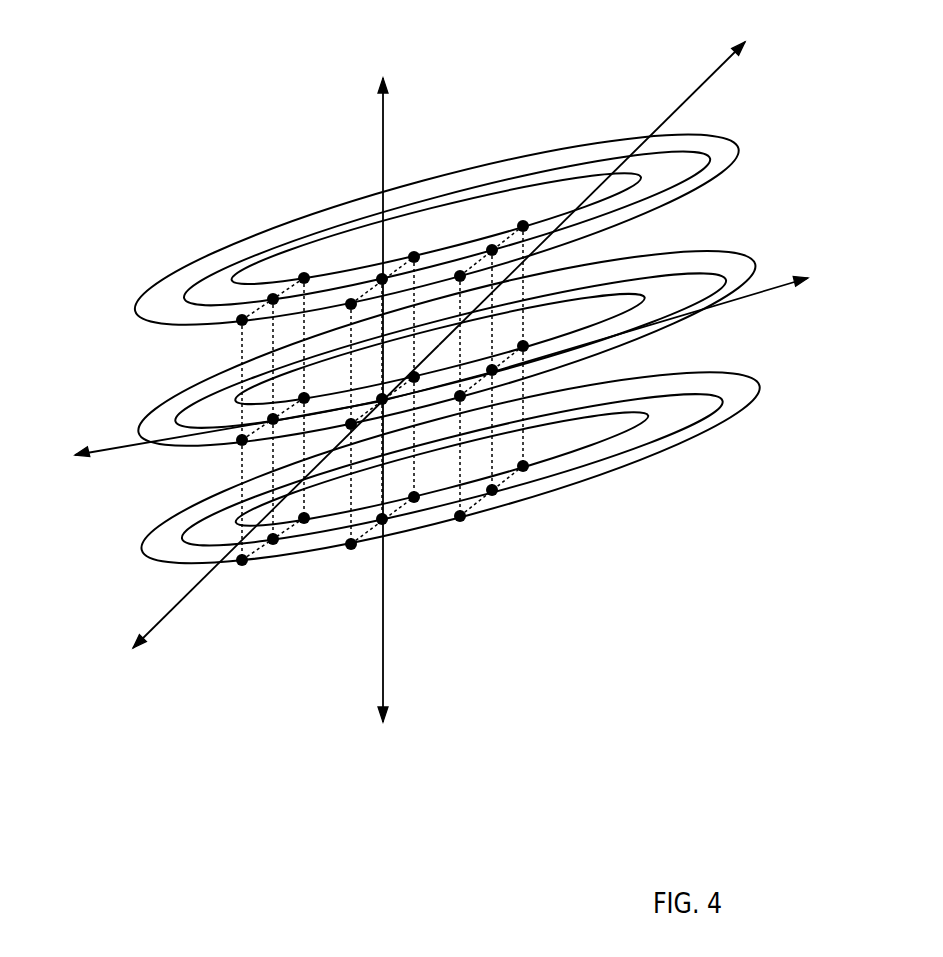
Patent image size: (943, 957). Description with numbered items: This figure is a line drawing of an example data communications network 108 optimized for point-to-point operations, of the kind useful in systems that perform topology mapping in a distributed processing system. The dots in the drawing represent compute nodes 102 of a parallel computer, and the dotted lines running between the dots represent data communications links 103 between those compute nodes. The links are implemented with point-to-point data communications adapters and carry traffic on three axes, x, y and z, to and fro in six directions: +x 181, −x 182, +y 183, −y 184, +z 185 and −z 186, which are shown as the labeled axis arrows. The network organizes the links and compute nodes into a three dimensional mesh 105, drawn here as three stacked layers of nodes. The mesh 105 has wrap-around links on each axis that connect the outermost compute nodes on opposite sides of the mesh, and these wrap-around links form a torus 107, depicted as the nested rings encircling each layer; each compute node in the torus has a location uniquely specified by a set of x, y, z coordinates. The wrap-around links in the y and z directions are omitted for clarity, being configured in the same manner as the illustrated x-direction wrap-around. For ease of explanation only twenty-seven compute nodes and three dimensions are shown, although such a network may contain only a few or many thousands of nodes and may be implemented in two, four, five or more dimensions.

The compute nodes 102 is at (523, 471).
The data communications links 103 is at (242, 340).
The three dimensional mesh 105 is at (527, 226).
The torus 107 is at (224, 223).
The data communications network 108 is at (343, 937).
The +x direction 181 is at (841, 306).
The −x direction 182 is at (70, 493).
The +y direction 183 is at (786, 68).
The −y direction 184 is at (130, 692).
The +z direction 185 is at (397, 68).
The −z direction 186 is at (398, 778).